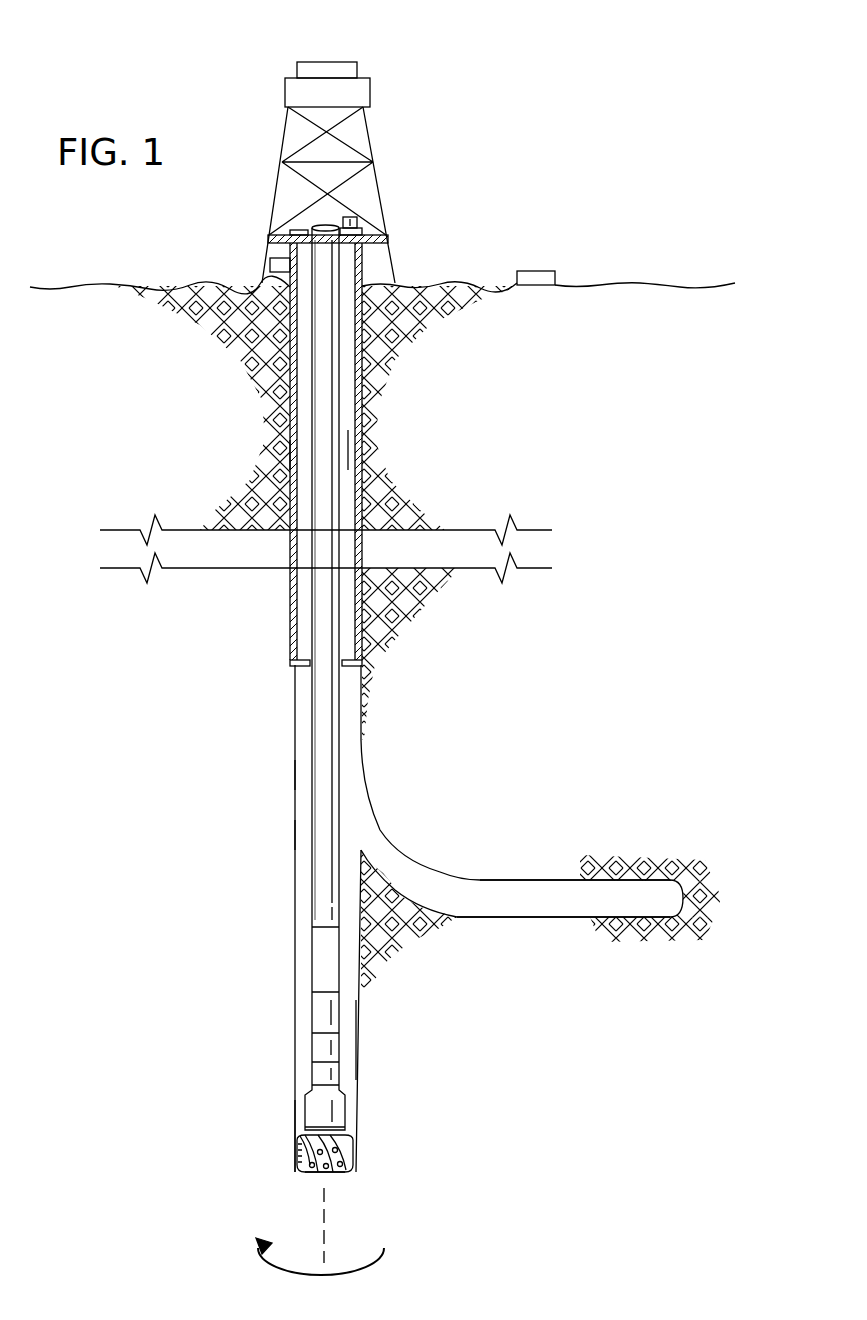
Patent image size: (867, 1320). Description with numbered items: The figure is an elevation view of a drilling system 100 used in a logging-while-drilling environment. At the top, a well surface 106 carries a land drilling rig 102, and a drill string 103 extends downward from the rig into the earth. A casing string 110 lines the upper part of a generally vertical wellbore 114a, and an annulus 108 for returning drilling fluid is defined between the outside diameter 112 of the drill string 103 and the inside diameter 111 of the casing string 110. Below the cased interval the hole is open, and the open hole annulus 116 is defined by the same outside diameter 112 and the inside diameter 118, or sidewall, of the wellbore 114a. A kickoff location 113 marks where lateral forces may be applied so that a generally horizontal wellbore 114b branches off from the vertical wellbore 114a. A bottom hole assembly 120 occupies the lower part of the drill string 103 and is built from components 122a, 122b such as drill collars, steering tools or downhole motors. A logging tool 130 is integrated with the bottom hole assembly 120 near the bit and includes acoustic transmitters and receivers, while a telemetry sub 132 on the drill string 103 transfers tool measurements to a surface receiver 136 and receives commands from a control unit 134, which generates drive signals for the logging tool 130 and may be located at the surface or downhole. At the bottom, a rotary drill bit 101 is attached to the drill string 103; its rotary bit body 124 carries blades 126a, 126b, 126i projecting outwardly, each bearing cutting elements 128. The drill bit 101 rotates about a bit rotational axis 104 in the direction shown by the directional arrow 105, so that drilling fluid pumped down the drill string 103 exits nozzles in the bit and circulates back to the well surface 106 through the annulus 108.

The drilling system 100 is at (542, 72).
The drill bit 101 is at (196, 1147).
The drilling rig 102 is at (214, 110).
The drill string 103 is at (344, 395).
The bit rotational axis 104 is at (322, 1196).
The directional arrow 105 is at (384, 1247).
The well surface 106 is at (372, 263).
The annulus 108 is at (301, 400).
The casing string 110 is at (291, 446).
The inside diameter of casing string 111 is at (348, 448).
The outside diameter of drill string 112 is at (311, 605).
The kickoff location 113 is at (358, 766).
The vertical wellbore 114a is at (198, 652).
The horizontal wellbore 114b is at (507, 862).
The open hole annulus 116 is at (305, 775).
The inside diameter of wellbore 118 is at (306, 830).
The bottom hole assembly 120 is at (372, 1040).
The component of BHA 122a is at (318, 958).
The component of BHA 122b is at (318, 1011).
The rotary bit body 124 is at (303, 1112).
The blade 126a is at (298, 1160).
The blade 126b is at (298, 1145).
The blade 126i is at (350, 1147).
The cutting elements 128 is at (348, 1172).
The logging tool 130 is at (318, 1073).
The telemetry sub 132 is at (318, 1045).
The control unit 134 is at (362, 222).
The surface receiver 136 is at (547, 271).